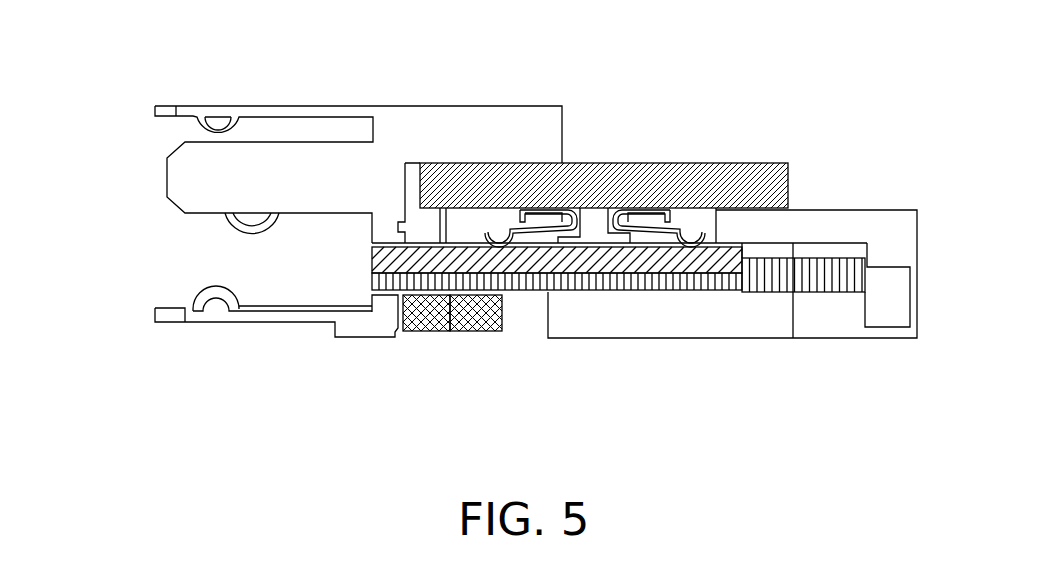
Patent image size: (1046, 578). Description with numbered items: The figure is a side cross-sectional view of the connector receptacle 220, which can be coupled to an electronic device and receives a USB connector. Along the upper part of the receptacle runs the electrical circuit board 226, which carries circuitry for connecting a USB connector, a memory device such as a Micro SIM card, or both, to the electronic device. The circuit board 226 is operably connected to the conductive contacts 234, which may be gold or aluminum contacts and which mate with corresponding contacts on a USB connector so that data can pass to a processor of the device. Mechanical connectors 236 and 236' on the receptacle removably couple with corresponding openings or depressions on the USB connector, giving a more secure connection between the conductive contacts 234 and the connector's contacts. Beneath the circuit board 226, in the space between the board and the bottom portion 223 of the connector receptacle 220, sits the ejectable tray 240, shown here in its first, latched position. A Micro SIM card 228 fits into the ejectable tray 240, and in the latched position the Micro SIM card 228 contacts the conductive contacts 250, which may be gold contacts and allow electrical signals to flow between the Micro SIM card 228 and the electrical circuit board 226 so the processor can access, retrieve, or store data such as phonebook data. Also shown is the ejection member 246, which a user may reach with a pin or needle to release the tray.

The connector receptacle 220 is at (229, 50).
The bottom portion 223 is at (288, 410).
The electrical circuit board 226 is at (740, 183).
The Micro SIM card 228 is at (508, 262).
The conductive contacts 234 is at (232, 234).
The mechanical connector 236 is at (227, 293).
The mechanical connector 236' is at (154, 126).
The ejectable tray 240 is at (843, 265).
The ejection member 246 is at (427, 313).
The conductive contacts 250 is at (505, 240).